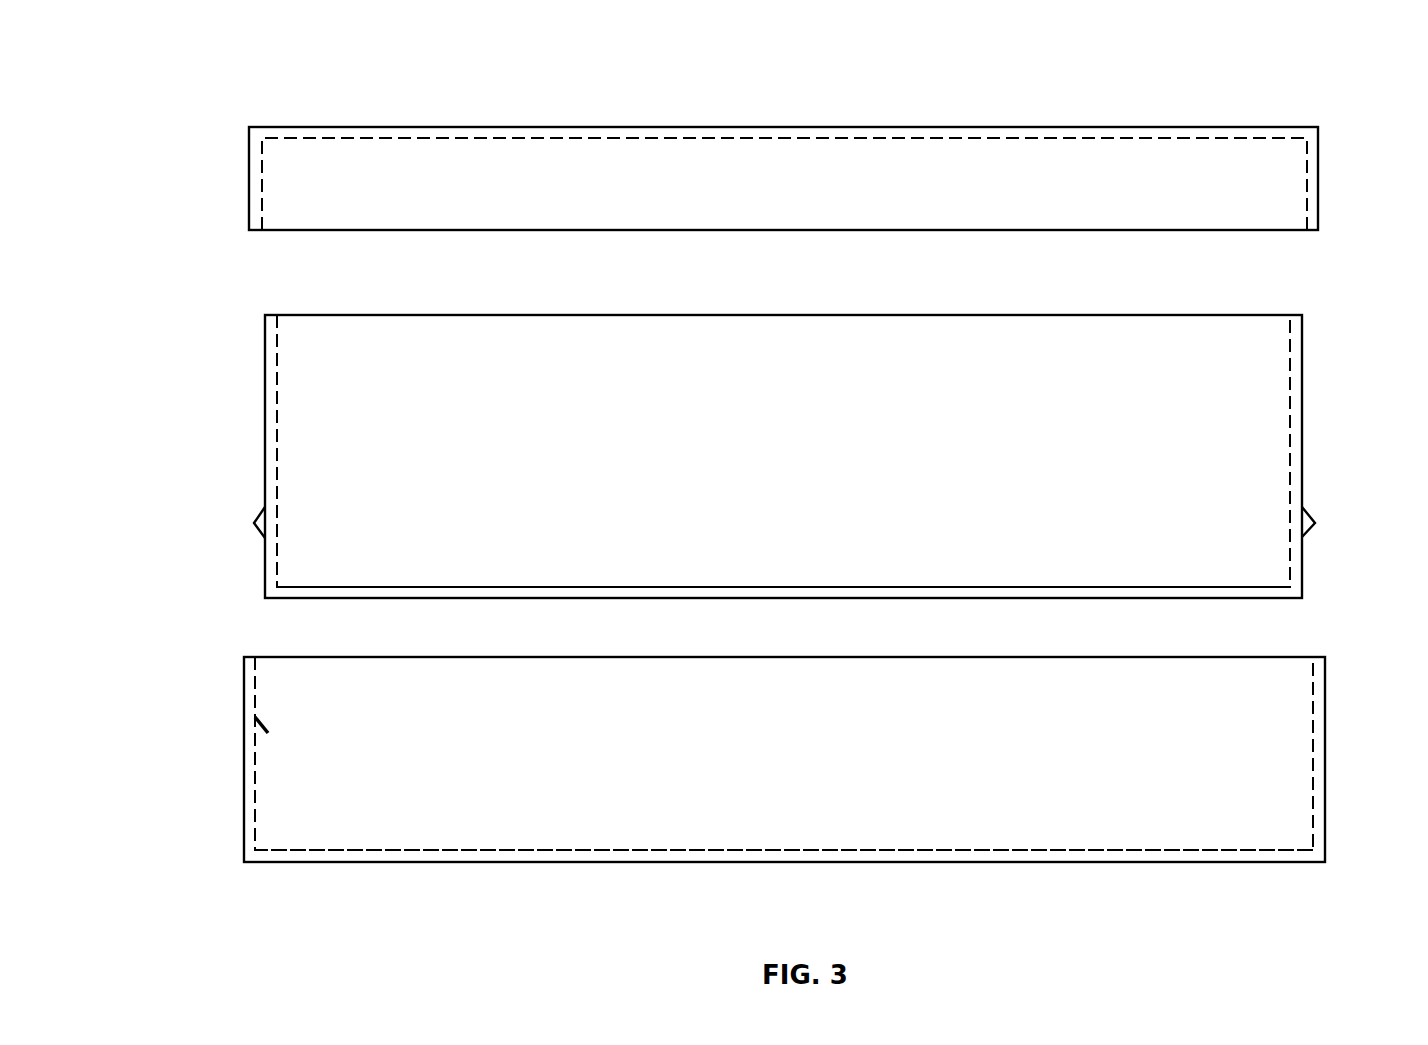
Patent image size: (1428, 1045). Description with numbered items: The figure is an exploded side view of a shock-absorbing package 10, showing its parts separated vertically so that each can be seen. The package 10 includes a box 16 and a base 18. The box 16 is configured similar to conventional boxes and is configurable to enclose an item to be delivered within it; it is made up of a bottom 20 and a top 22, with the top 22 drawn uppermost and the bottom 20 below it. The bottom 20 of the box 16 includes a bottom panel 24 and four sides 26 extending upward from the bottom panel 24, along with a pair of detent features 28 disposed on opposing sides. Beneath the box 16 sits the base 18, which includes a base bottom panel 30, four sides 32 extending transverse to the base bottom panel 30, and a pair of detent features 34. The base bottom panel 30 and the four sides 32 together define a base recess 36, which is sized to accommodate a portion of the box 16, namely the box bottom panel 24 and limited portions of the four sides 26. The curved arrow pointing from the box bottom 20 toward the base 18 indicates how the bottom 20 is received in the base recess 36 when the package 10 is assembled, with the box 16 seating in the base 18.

The shock-absorbing package 10 is at (206, 106).
The box 16 is at (1368, 209).
The base 18 is at (1325, 862).
The bottom 20 is at (1189, 315).
The top 22 is at (1318, 127).
The bottom panel 24 is at (672, 587).
The sides 26 is at (278, 405).
The detent features 28 is at (262, 510).
The base bottom panel 30 is at (698, 850).
The sides 32 is at (255, 788).
The detent feature 34 is at (263, 723).
The base recess 36 is at (893, 646).